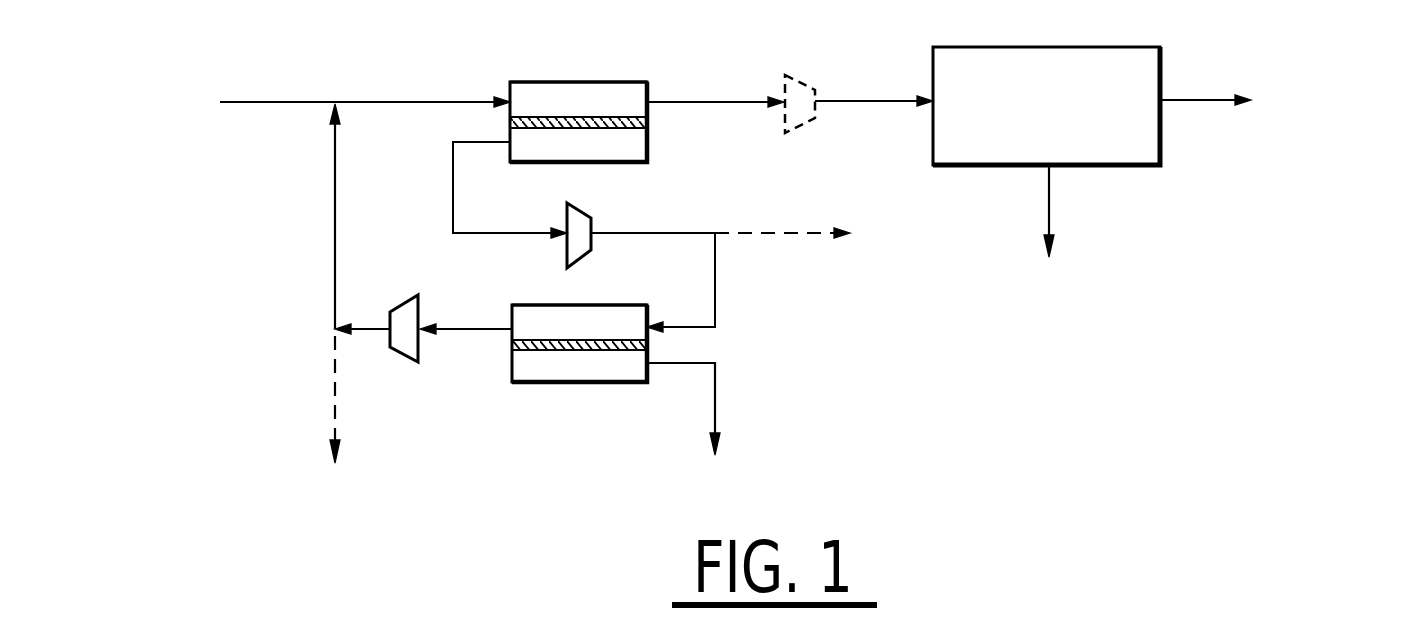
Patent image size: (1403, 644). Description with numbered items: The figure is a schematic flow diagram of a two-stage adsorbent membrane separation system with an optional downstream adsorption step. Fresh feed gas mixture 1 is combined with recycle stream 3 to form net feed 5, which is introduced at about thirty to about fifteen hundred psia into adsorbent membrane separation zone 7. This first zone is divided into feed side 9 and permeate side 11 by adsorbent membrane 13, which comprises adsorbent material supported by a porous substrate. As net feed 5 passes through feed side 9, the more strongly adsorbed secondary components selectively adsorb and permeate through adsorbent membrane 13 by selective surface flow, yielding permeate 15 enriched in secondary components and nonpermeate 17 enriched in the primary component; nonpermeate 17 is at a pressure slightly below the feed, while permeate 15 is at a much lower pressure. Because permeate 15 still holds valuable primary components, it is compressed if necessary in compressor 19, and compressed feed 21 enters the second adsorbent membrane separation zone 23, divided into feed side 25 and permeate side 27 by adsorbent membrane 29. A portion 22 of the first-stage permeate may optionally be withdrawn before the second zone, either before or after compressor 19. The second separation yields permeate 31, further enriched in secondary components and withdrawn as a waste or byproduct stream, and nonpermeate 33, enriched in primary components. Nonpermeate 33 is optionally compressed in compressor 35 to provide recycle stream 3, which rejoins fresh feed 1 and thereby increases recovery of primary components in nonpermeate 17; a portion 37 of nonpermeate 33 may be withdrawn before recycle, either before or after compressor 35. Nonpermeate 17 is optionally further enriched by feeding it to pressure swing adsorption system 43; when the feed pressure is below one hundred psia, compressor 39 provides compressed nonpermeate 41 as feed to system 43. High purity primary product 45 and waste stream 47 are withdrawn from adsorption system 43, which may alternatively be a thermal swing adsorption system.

The fresh feed gas mixture 1 is at (258, 104).
The recycle stream 3 is at (333, 189).
The net feed 5 is at (413, 101).
The adsorbent membrane separation zone 7 is at (538, 60).
The feed side 9 is at (621, 92).
The permeate side 11 is at (548, 147).
The adsorbent membrane 13 is at (624, 133).
The permeate 15 is at (452, 190).
The nonpermeate 17 is at (708, 104).
The compressor 19 is at (592, 218).
The compressed feed 21 is at (716, 289).
The portion of permeate 22 is at (762, 232).
The adsorbent membrane separation zone 23 is at (519, 292).
The feed side 25 is at (615, 315).
The permeate side 27 is at (613, 365).
The adsorbent membrane 29 is at (540, 350).
The permeate 31 is at (717, 410).
The nonpermeate 33 is at (461, 332).
The compressor 35 is at (410, 301).
The portion of nonpermeate 37 is at (333, 372).
The compressor 39 is at (812, 90).
The compressed nonpermeate 41 is at (872, 100).
The pressure swing adsorption system 43 is at (1072, 121).
The high purity primary product 45 is at (1186, 100).
The waste stream 47 is at (1047, 210).